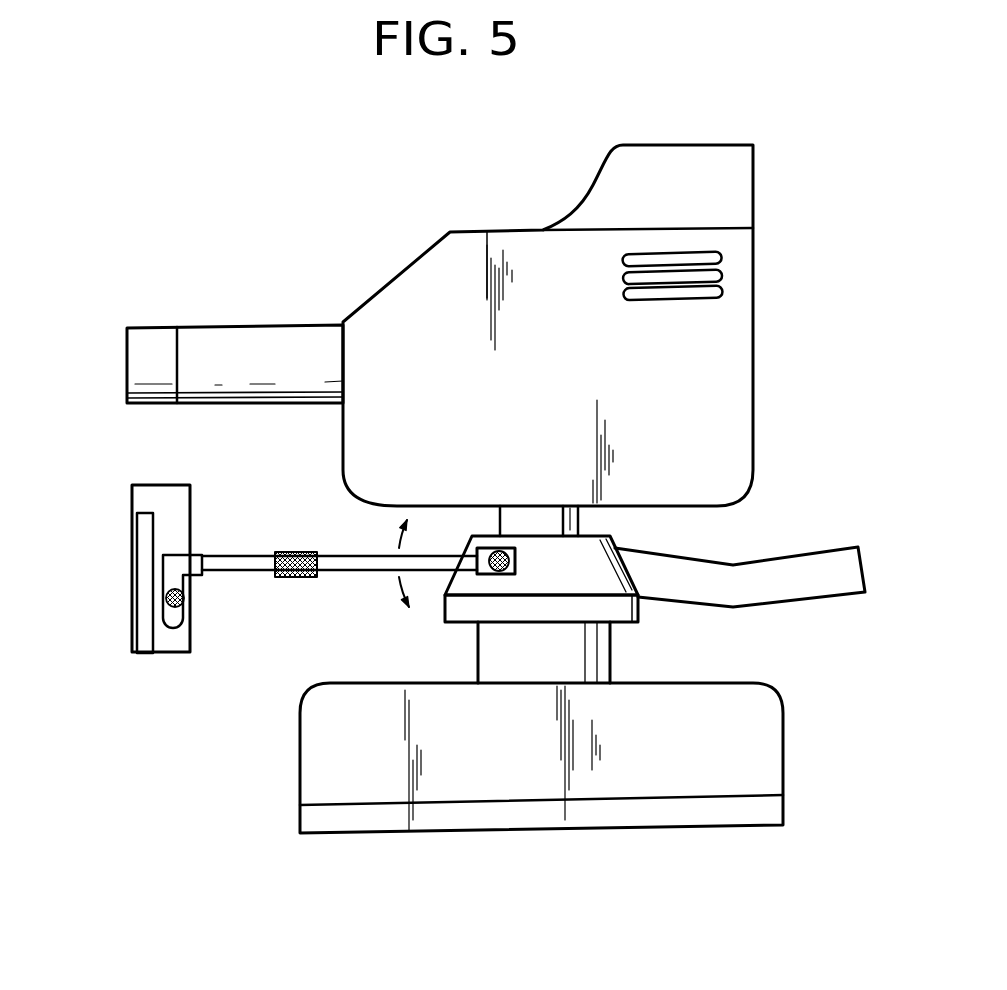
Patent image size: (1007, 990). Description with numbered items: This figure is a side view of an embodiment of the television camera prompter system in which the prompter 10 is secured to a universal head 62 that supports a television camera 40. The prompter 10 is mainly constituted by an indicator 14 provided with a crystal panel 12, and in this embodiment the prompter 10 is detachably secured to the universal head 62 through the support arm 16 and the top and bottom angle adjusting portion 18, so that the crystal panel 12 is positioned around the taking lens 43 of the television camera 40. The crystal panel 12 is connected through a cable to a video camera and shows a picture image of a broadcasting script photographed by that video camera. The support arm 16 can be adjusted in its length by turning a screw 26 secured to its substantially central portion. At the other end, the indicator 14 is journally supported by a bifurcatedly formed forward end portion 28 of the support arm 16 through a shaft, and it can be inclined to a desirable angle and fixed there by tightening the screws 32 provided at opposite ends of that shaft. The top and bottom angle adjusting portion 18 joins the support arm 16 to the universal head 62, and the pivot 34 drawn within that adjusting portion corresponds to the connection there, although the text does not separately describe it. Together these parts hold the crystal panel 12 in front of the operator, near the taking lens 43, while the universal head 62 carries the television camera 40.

The prompter 10 is at (151, 577).
The crystal panel 12 is at (130, 580).
The indicator 14 is at (147, 483).
The support arm 16 is at (342, 553).
The top and bottom angle adjusting portion 18 is at (507, 577).
The screw 26 is at (297, 580).
The bifurcatedly formed forward end portion 28 is at (177, 580).
The screws 32 is at (212, 640).
The pivot pin 34 is at (490, 577).
The television camera 40 is at (753, 340).
The taking lens 43 is at (247, 340).
The universal head 62 is at (626, 611).